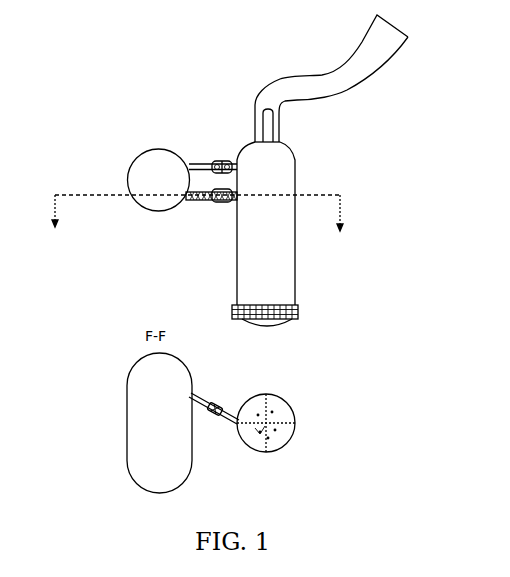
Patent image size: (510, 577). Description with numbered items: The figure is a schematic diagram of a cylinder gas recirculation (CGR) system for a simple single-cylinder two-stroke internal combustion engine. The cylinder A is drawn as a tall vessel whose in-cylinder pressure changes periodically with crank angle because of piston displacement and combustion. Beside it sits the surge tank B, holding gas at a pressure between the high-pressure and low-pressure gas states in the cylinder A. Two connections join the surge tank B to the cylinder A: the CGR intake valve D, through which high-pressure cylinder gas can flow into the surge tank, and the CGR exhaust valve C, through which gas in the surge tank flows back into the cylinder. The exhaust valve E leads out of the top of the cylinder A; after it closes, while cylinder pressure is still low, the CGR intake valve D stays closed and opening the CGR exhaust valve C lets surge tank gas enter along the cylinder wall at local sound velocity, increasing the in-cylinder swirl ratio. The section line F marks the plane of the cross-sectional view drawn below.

The cylinder A is at (260, 248).
The surge tank B is at (150, 160).
The CGR exhaust valve C is at (220, 207).
The CGR intake valve D is at (213, 155).
The exhaust valve E is at (255, 132).
The section line F- F is at (196, 213).